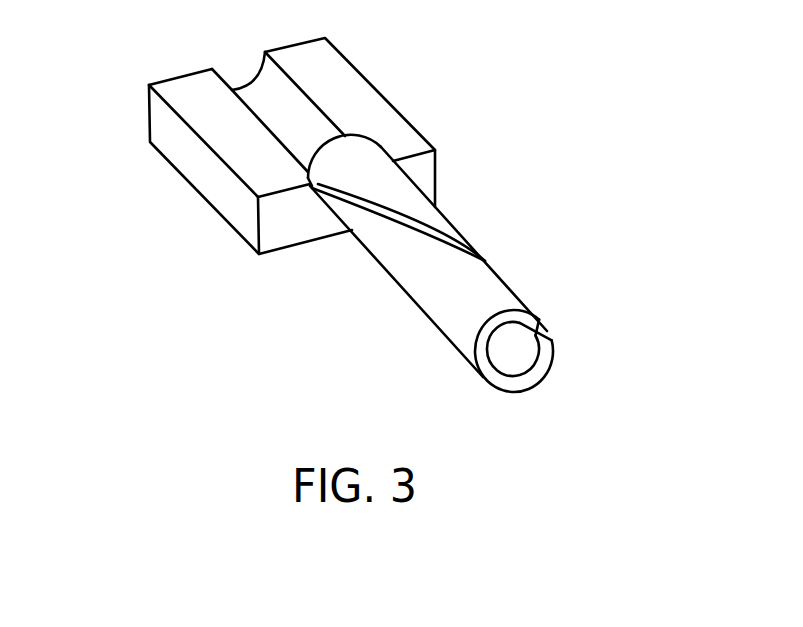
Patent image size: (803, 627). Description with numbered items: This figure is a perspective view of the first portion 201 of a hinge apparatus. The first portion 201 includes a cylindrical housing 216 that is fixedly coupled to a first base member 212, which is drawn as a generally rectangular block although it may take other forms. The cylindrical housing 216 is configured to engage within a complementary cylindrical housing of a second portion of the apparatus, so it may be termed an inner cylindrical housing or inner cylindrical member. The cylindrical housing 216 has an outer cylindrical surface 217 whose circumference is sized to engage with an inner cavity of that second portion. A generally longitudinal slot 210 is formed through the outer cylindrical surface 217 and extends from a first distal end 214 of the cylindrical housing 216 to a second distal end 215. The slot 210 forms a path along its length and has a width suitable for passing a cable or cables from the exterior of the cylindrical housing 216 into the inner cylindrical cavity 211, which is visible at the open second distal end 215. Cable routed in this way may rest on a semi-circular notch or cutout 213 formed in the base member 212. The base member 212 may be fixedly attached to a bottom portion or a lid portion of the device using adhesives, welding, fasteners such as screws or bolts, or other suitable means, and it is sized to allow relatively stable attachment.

The first portion 201 is at (540, 40).
The slot 210 is at (572, 330).
The inner cylindrical cavity 211 is at (531, 363).
The first base member 212 is at (150, 85).
The semi-circular notch or cutout 213 is at (233, 45).
The first distal end 214 is at (317, 150).
The second distal end 215 is at (548, 371).
The cylindrical housing 216 is at (526, 207).
The outer cylindrical surface 217 is at (458, 294).